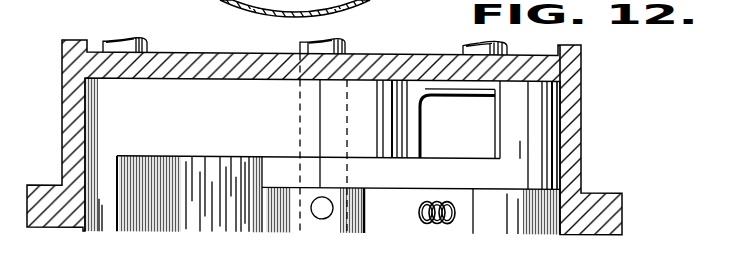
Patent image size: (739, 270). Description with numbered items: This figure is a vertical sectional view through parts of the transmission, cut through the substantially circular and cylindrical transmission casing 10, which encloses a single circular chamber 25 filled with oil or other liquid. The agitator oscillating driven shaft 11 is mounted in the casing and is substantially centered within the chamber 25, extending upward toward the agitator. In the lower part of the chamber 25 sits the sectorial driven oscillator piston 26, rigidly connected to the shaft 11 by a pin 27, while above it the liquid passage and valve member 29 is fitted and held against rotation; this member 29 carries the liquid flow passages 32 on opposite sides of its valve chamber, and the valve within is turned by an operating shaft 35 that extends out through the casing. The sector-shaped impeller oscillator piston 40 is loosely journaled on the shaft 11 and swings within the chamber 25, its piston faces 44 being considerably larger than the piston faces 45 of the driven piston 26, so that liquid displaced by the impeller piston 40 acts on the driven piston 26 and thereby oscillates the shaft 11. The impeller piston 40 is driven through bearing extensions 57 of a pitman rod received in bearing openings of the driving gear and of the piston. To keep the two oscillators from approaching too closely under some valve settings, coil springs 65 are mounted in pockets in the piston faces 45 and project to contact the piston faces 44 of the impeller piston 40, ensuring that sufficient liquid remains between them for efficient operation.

The transmission casing 10 is at (575, 158).
The agitator oscillating driven shaft 11 is at (341, 38).
The circular chamber 25 is at (565, 128).
The driven oscillator piston 26 is at (492, 214).
The pin 27 is at (322, 217).
The liquid passage and valve member 29 is at (530, 168).
The liquid flow passages 32 is at (455, 140).
The operating shaft 35 is at (505, 45).
The impeller oscillator piston 40 is at (90, 109).
The piston faces 44 is at (200, 219).
The piston faces 45 is at (400, 219).
The bearing extensions 57 is at (148, 42).
The coil springs 65 is at (450, 224).